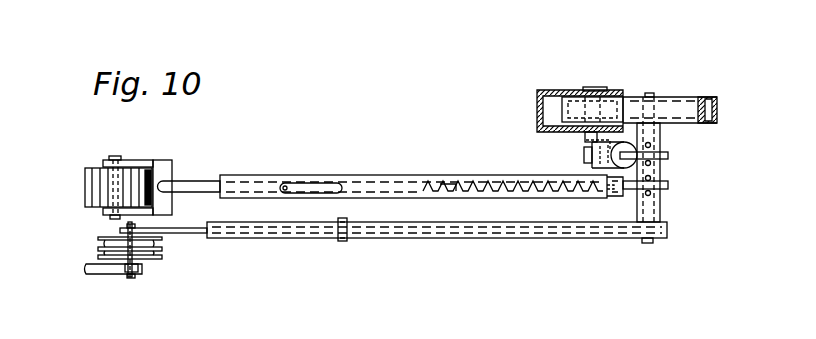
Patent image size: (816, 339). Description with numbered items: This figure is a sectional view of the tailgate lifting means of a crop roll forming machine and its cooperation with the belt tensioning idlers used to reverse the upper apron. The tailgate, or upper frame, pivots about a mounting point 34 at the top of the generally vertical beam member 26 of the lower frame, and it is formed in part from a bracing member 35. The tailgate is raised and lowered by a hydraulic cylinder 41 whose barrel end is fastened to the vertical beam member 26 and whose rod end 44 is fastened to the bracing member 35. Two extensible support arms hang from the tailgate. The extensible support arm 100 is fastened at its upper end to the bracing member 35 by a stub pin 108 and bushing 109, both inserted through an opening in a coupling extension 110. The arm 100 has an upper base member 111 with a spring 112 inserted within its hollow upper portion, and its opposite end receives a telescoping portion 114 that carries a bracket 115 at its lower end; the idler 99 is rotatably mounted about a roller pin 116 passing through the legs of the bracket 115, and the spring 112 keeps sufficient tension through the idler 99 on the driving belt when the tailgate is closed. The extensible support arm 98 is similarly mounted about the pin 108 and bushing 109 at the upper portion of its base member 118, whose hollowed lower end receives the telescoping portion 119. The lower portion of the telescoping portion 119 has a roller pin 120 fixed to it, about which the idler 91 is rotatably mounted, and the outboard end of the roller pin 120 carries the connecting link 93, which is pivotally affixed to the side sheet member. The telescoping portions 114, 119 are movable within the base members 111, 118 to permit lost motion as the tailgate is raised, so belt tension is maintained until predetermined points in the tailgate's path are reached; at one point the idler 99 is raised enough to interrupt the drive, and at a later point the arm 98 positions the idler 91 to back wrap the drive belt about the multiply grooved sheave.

The vertical beam member 26 is at (557, 90).
The mounting point 34 is at (602, 87).
The bracing member 35 is at (708, 97).
The hydraulic cylinder 41 is at (590, 152).
The rod end 44 is at (670, 155).
The idler 91 is at (158, 262).
The connecting link 93 is at (103, 275).
The extensible support arm 98 is at (410, 242).
The idler 99 is at (84, 185).
The extensible support arm 100 is at (322, 172).
The stub pin 108 is at (649, 93).
The bushing 109 is at (662, 220).
The coupling extension 110 is at (670, 185).
The upper base member 111 is at (411, 175).
The spring 112 is at (453, 175).
The telescoping portion 114 is at (207, 175).
The bracket 115 is at (162, 160).
The roller pin 116 is at (115, 156).
The base member 118 is at (560, 240).
The telescoping portion 119 is at (192, 234).
The roller pin 120 is at (132, 280).